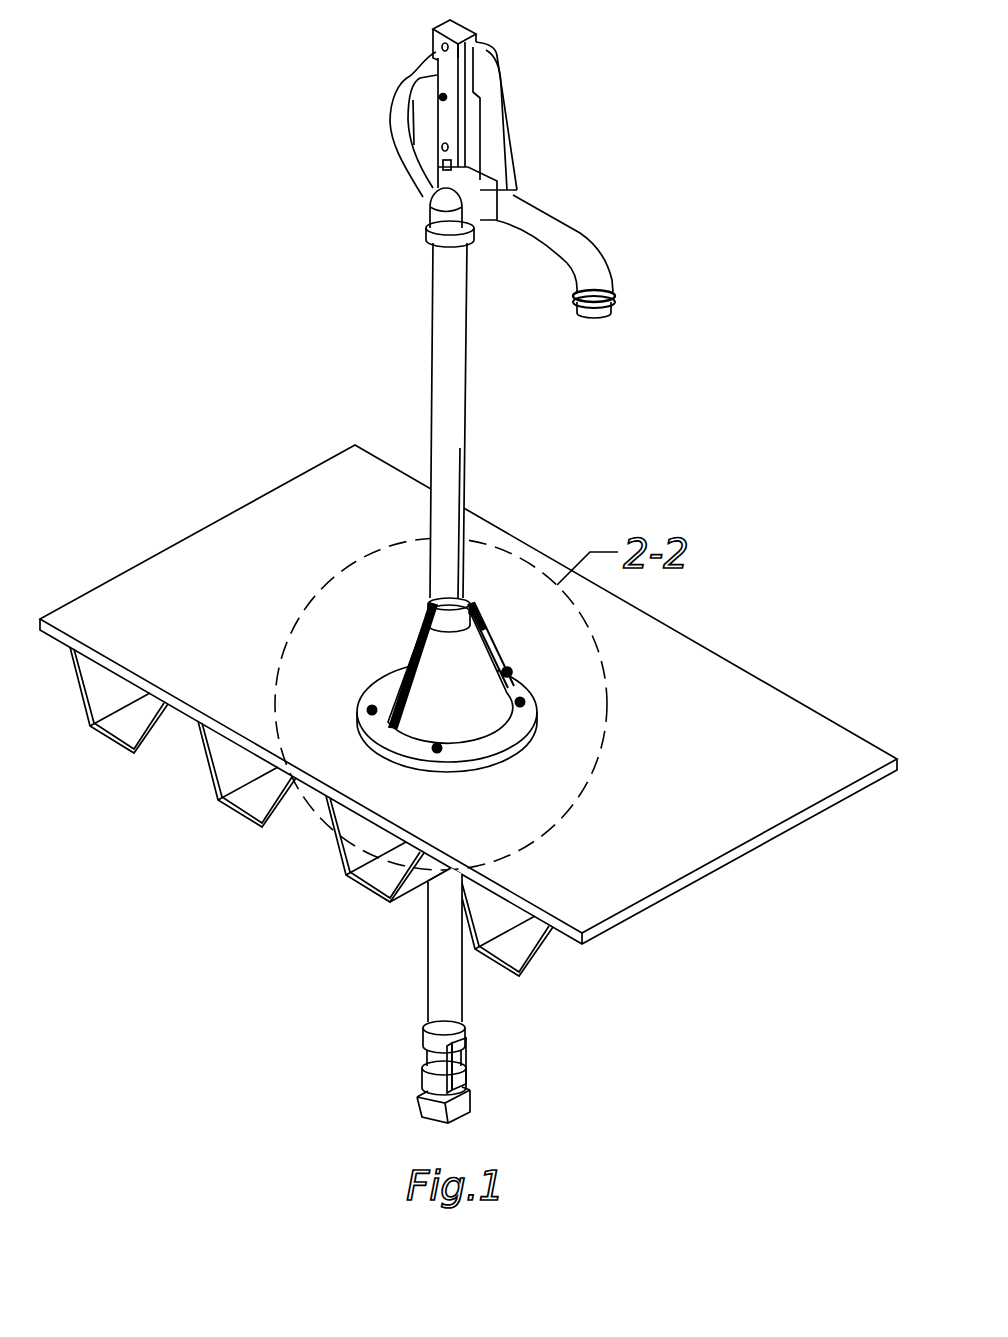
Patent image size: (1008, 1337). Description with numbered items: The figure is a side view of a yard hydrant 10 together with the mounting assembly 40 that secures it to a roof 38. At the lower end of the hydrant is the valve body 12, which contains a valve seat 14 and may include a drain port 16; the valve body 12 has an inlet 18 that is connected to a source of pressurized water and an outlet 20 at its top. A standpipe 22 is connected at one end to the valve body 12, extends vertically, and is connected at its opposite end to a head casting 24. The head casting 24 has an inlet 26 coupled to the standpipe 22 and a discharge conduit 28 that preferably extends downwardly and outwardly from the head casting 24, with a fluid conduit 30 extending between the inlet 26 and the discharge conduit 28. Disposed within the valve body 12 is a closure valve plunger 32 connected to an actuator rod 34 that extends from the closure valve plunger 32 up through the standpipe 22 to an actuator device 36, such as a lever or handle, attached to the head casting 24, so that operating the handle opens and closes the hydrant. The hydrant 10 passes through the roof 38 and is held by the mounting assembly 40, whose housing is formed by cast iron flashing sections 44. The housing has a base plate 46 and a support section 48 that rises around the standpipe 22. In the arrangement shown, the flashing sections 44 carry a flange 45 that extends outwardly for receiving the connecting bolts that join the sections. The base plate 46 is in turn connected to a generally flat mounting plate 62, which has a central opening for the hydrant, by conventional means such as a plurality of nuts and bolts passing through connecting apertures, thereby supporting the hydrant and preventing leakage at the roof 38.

The yard hydrant 10 is at (551, 49).
The valve body 12 is at (424, 1030).
The valve seat 14 is at (422, 1071).
The drain port 16 is at (468, 1055).
The inlet 18 is at (428, 1118).
The outlet 20 is at (428, 1012).
The standpipe 22 is at (467, 402).
The head casting 24 is at (540, 160).
The inlet 26 is at (434, 246).
The discharge conduit 28 is at (601, 318).
The fluid conduit 30 is at (486, 226).
The closure valve plunger 32 is at (462, 1004).
The actuator rod 34 is at (460, 492).
The actuator device 36 is at (393, 103).
The roof 38 is at (237, 812).
The mounting assembly 40 is at (420, 624).
The flashing sections 44 is at (482, 633).
The flange 45 is at (423, 668).
The base plate 46 is at (518, 736).
The support section 48 is at (488, 668).
The mounting plate 62 is at (673, 810).